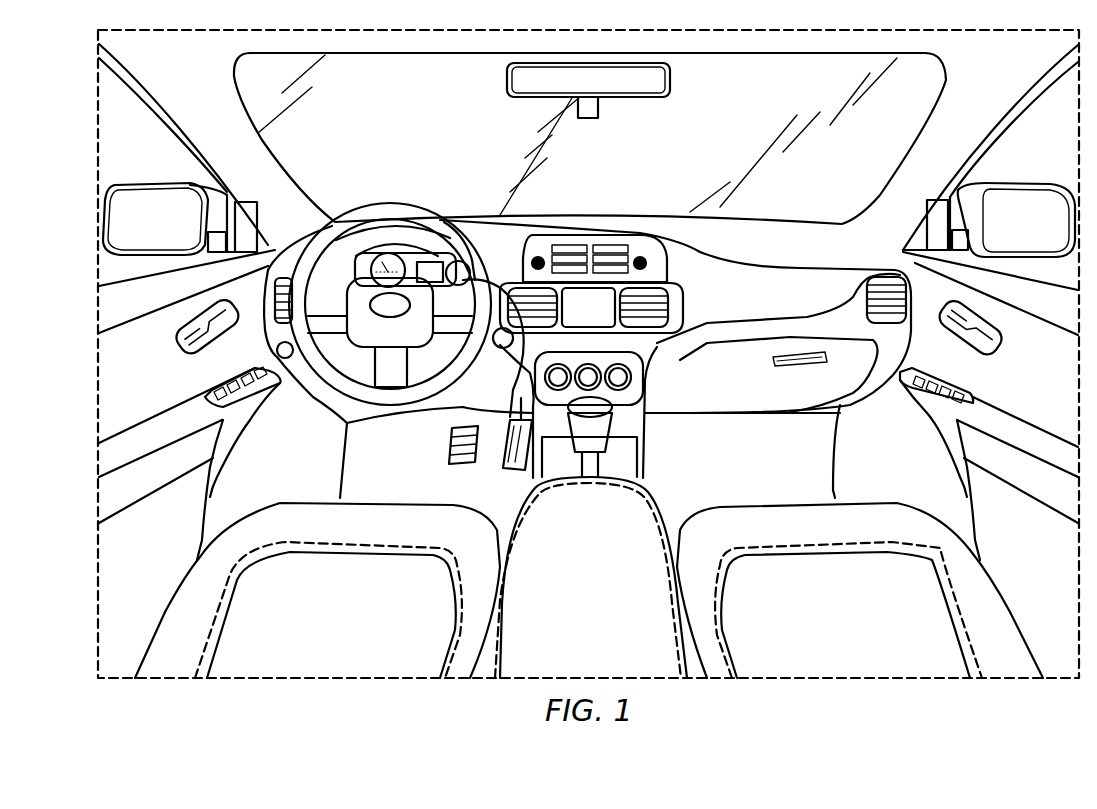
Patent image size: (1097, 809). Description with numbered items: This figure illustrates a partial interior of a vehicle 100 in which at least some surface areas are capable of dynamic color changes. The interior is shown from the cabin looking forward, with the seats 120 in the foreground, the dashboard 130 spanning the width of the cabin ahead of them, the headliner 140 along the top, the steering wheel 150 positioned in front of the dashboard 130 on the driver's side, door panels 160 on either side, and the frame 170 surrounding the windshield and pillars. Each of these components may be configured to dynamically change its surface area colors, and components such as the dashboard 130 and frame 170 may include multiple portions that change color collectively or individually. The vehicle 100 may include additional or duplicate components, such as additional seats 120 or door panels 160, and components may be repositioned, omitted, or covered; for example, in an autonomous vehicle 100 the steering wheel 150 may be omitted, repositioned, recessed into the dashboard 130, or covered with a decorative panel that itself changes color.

The vehicle 100 is at (839, 684).
The seats 120 is at (589, 577).
The dashboard 130 is at (587, 359).
The headliner 140 is at (431, 42).
The steering wheel 150 is at (399, 213).
The door panels 160 is at (588, 371).
The frame 170 is at (234, 58).